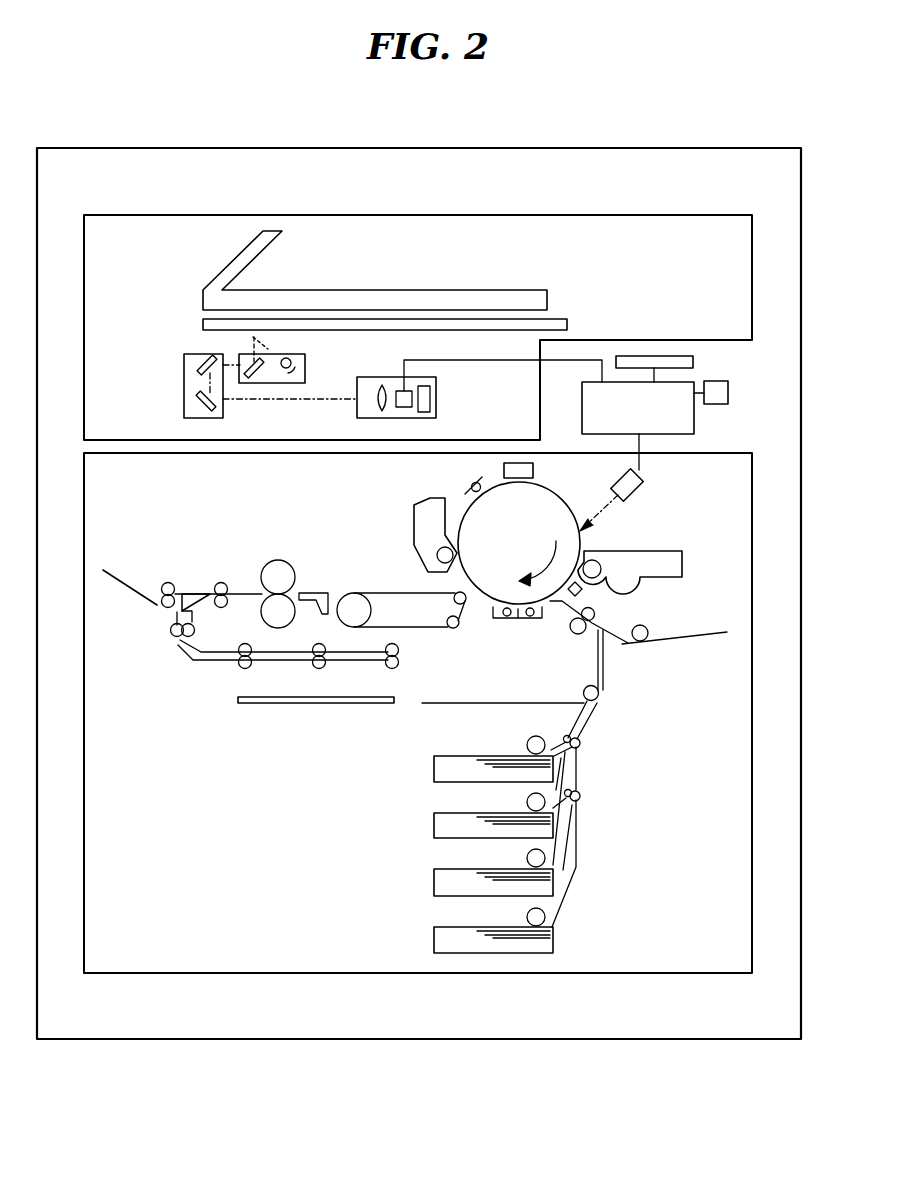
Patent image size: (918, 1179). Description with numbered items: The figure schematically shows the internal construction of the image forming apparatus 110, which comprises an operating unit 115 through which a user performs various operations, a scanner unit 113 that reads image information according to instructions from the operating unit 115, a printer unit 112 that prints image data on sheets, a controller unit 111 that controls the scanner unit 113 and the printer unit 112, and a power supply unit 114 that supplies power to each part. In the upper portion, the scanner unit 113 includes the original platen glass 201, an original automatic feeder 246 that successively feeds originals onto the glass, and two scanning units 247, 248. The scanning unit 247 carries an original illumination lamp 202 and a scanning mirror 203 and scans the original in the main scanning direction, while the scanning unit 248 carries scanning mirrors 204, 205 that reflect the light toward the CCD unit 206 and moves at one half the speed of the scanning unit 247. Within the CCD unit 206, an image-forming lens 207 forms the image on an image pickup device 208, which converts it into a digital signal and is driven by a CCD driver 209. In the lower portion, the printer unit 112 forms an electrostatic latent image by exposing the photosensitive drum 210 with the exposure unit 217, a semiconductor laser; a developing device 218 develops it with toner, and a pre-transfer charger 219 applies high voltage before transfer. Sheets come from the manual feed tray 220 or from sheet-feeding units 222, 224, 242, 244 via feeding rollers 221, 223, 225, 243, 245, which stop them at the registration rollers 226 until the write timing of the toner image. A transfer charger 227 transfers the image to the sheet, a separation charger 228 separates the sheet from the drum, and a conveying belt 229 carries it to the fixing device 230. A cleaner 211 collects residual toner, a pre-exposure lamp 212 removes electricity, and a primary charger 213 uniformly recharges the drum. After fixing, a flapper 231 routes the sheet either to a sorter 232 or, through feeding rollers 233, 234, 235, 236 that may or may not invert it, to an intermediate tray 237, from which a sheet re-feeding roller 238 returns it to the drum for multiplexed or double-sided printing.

The image forming apparatus 110 is at (603, 147).
The controller unit 111 is at (696, 420).
The printer unit 112 is at (415, 975).
The scanner unit 113 is at (546, 213).
The power supply unit 114 is at (728, 390).
The operating unit 115 is at (655, 356).
The original platen glass 201 is at (568, 320).
The original illumination lamp 202 is at (291, 361).
The scanning mirror 203 is at (258, 378).
The scanning mirror 204 is at (198, 364).
The scanning mirror 205 is at (200, 404).
The CCD unit 206 is at (437, 386).
The image-forming lens 207 is at (376, 400).
The image pickup device 208 is at (402, 389).
The CCD driver 209 is at (432, 406).
The photosensitive drum 210 is at (582, 545).
The cleaner 211 is at (412, 512).
The pre-exposure lamp 212 is at (470, 485).
The primary charger 213 is at (535, 470).
The exposure unit 217 is at (642, 492).
The fixing unit 218 is at (660, 552).
The pre-transfer charger 219 is at (590, 592).
The manual feed tray 220 is at (690, 637).
The feeding roller 221 is at (648, 627).
The sheet-feeding unit 222 is at (432, 769).
The feeding roller 223 is at (527, 745).
The sheet-feeding unit 224 is at (432, 825).
The feeding roller 225 is at (527, 803).
The registration rollers 226 is at (578, 636).
The transfer charger 227 is at (528, 620).
The separation charger 228 is at (503, 620).
The conveying belt 229 is at (400, 593).
The fixing device 230 is at (278, 560).
The flapper 231 is at (195, 592).
The sorter 232 is at (125, 582).
The feeding roller 233 is at (172, 636).
The feeding roller 234 is at (240, 668).
The feeding roller 235 is at (315, 668).
The feeding roller 236 is at (389, 668).
The intermediate tray 237 is at (275, 705).
The sheet re-feeding roller 238 is at (600, 700).
The sheet-feeding unit 242 is at (432, 882).
The feeding roller 243 is at (527, 858).
The sheet-feeding unit 244 is at (432, 939).
The feeding roller 245 is at (527, 917).
The original automatic feeder 246 is at (203, 296).
The scanning unit 247 is at (247, 360).
The scanning unit 248 is at (184, 387).